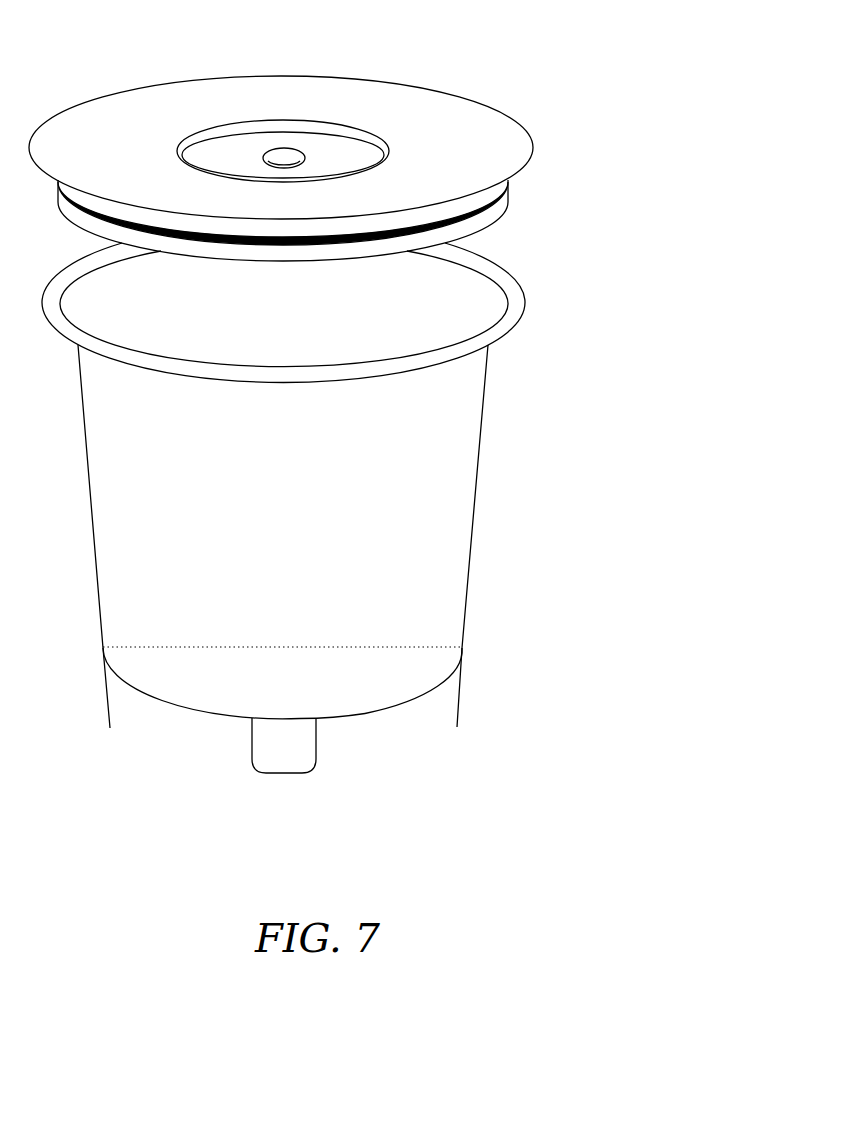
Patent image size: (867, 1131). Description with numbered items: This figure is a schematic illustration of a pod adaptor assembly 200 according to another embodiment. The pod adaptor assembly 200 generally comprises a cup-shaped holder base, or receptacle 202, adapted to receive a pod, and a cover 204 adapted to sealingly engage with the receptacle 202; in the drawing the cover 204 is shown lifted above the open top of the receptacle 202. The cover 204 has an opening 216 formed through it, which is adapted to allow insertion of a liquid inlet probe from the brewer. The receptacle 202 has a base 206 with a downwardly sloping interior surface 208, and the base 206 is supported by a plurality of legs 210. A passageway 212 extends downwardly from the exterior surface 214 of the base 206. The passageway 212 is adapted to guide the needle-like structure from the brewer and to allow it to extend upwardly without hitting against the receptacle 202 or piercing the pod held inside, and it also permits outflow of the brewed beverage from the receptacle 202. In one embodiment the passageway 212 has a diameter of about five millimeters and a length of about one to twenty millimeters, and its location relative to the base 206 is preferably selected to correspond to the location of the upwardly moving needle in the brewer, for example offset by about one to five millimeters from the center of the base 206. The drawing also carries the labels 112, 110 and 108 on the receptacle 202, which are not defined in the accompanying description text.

The pod adaptor assembly 200 is at (577, 98).
The cover 204 is at (455, 95).
The opening 216 is at (284, 149).
The cup-shaped holder base (receptacle) 202 is at (555, 446).
The open top 112 is at (439, 300).
The interior chamber 110 is at (226, 438).
The side wall 108 is at (463, 545).
The legs 210 is at (458, 692).
The base 206 is at (190, 712).
The downwardly sloping interior surface 208 is at (357, 713).
The exterior surface 214 is at (373, 713).
The passageway 212 is at (290, 773).